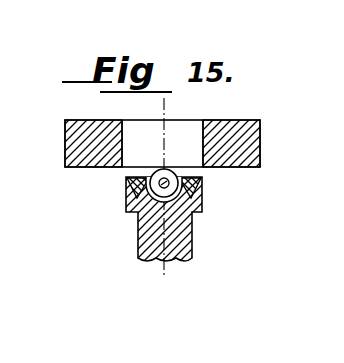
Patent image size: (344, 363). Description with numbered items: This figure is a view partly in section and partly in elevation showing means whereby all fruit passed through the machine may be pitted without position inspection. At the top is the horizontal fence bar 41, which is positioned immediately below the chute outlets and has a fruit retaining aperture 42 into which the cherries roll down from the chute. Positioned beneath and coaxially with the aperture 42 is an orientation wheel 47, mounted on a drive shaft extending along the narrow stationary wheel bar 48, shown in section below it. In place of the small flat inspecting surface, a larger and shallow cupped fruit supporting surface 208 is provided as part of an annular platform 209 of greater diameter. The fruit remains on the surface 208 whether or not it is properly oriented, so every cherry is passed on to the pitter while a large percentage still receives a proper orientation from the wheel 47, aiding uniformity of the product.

The fence bar 41 is at (258, 130).
The fruit retaining aperture 42 is at (134, 128).
The orientation wheel 47 is at (150, 184).
The wheel bar 48 is at (148, 231).
The fruit supporting surface 208 is at (180, 172).
The annular platform 209 is at (181, 192).